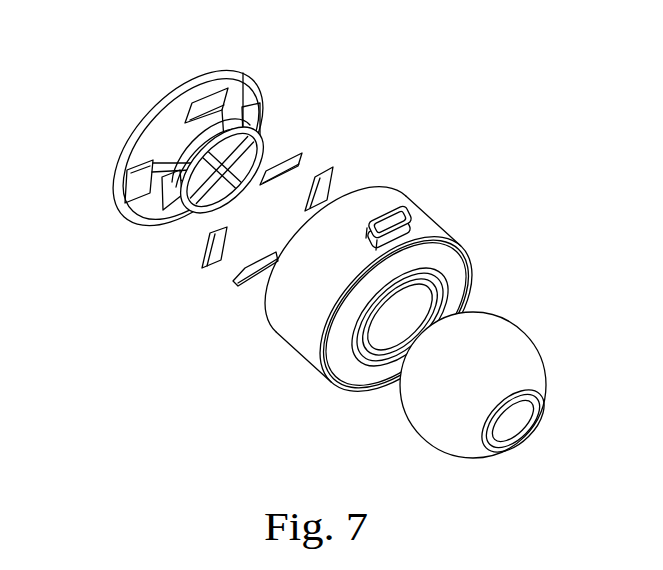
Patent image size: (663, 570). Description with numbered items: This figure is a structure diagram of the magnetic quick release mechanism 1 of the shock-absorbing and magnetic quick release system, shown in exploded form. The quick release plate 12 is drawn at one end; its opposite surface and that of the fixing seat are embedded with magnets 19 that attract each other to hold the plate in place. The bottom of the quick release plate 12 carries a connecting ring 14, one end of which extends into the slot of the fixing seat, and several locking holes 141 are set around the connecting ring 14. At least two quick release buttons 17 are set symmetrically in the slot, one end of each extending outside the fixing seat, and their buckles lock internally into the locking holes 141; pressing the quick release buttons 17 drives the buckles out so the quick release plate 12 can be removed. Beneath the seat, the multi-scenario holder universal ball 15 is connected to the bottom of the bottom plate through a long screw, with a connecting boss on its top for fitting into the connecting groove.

The magnetic quick release mechanism 1 is at (432, 216).
The quick release plate 12 is at (166, 148).
The connecting ring 14 is at (189, 161).
The locking holes 141 is at (218, 126).
The multi-scenario holder universal ball 15 is at (467, 347).
The quick release buttons 17 is at (385, 223).
The magnets 19 is at (141, 177).